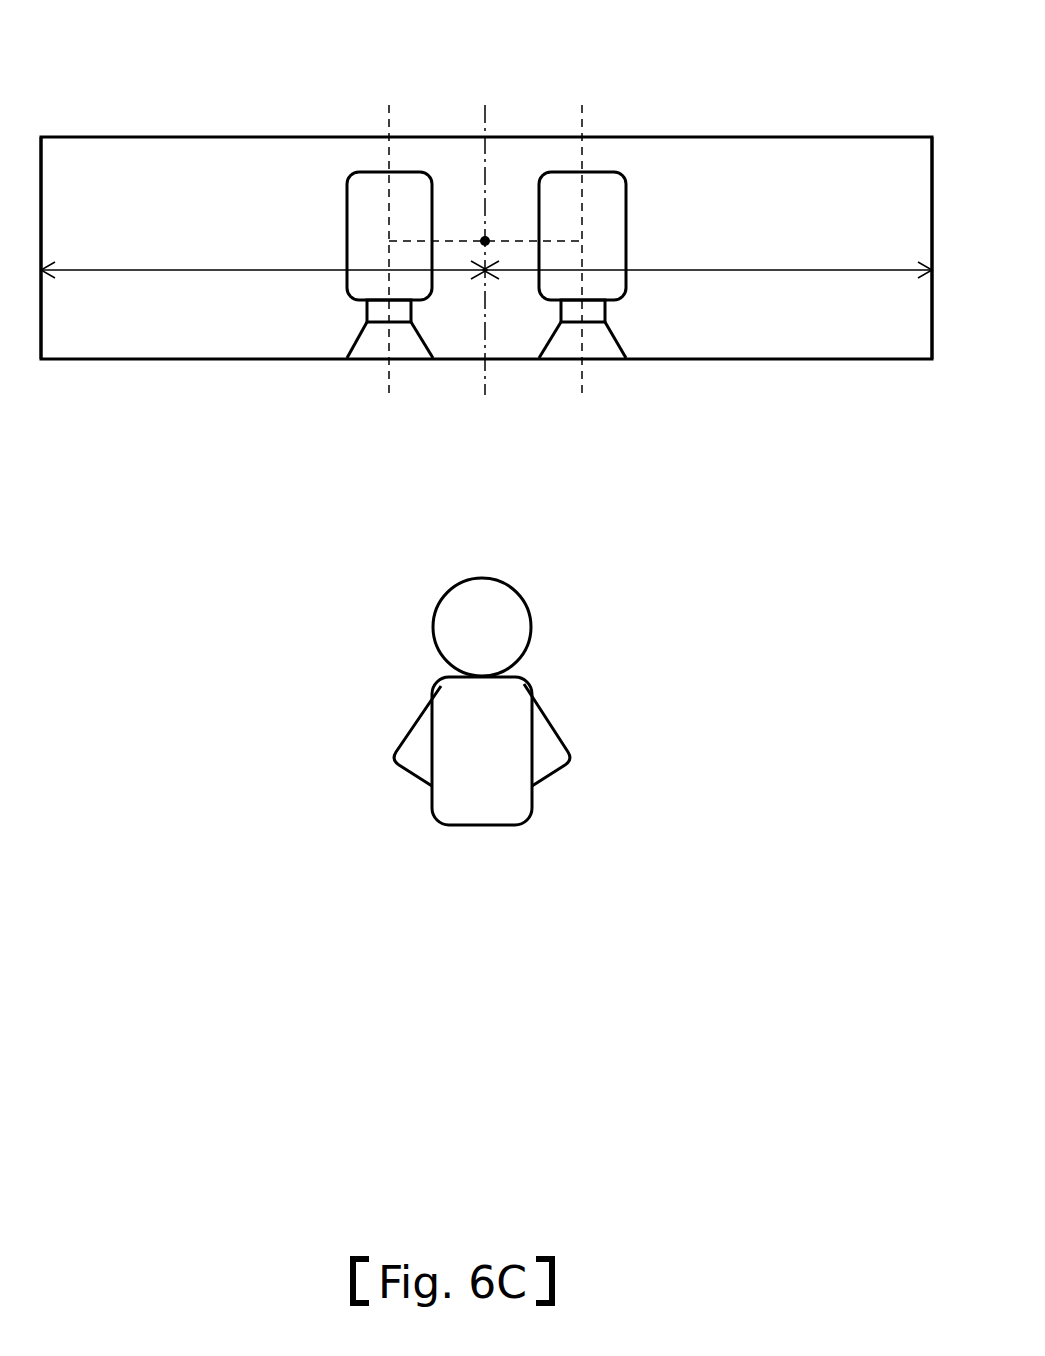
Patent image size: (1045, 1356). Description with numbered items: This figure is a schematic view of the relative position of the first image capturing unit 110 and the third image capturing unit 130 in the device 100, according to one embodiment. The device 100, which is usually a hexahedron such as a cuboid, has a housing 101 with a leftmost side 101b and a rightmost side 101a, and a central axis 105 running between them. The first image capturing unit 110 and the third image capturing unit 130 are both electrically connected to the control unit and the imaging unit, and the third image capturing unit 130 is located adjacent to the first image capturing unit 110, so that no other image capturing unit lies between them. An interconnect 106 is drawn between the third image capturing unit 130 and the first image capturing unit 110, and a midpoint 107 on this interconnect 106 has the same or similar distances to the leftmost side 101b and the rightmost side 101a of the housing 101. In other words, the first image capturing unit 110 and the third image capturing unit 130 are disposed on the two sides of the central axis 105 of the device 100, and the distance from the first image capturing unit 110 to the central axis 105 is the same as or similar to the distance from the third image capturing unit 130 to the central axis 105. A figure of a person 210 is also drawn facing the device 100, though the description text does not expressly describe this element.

The device 100 is at (915, 179).
The housing 101 is at (228, 138).
The rightmost side 101a is at (932, 371).
The leftmost side 101b is at (41, 372).
The central axis 105 is at (486, 393).
The interconnect 106 is at (532, 239).
The midpoint 107 is at (484, 238).
The first image capturing unit 110 is at (627, 237).
The third image capturing unit 130 is at (346, 237).
The occupant 210 is at (552, 718).